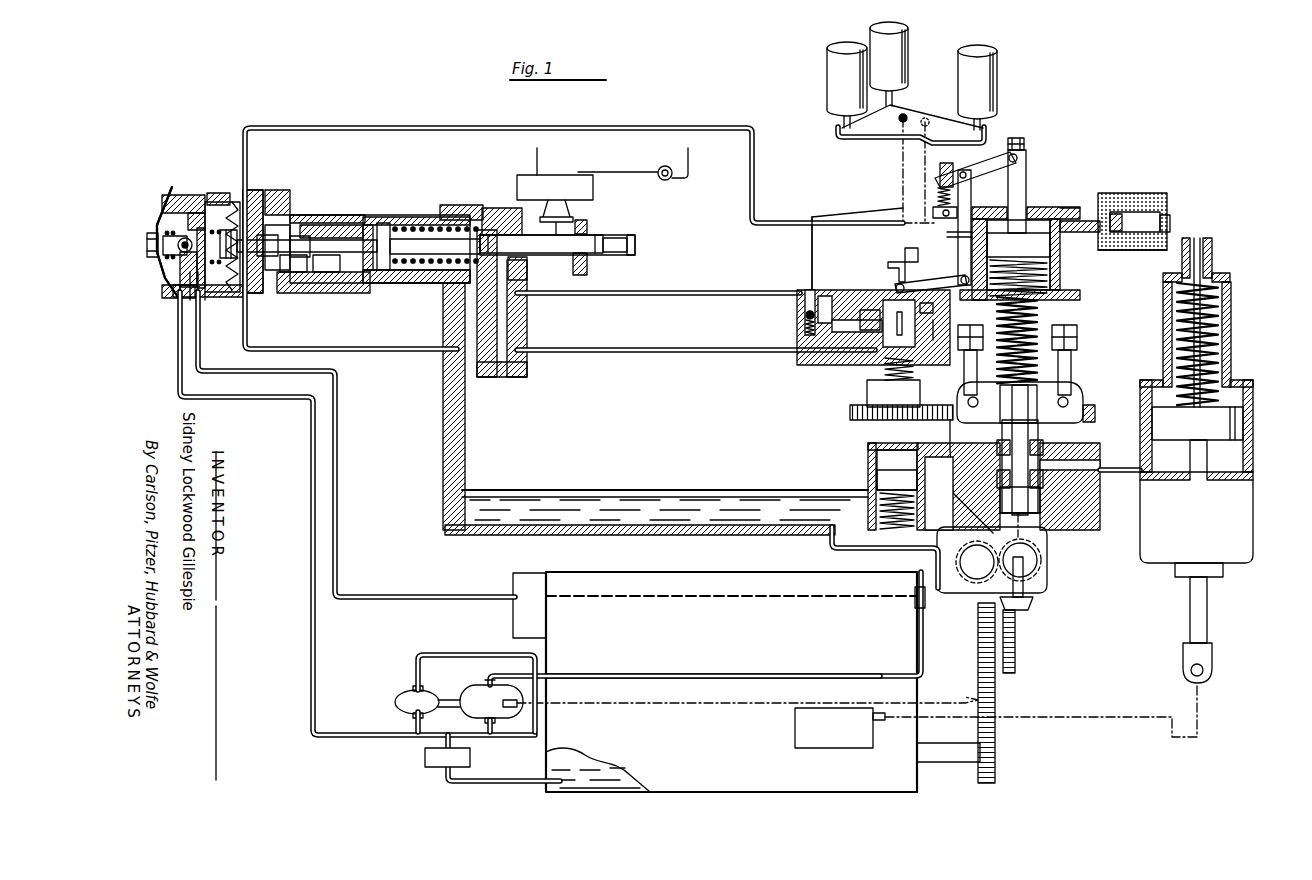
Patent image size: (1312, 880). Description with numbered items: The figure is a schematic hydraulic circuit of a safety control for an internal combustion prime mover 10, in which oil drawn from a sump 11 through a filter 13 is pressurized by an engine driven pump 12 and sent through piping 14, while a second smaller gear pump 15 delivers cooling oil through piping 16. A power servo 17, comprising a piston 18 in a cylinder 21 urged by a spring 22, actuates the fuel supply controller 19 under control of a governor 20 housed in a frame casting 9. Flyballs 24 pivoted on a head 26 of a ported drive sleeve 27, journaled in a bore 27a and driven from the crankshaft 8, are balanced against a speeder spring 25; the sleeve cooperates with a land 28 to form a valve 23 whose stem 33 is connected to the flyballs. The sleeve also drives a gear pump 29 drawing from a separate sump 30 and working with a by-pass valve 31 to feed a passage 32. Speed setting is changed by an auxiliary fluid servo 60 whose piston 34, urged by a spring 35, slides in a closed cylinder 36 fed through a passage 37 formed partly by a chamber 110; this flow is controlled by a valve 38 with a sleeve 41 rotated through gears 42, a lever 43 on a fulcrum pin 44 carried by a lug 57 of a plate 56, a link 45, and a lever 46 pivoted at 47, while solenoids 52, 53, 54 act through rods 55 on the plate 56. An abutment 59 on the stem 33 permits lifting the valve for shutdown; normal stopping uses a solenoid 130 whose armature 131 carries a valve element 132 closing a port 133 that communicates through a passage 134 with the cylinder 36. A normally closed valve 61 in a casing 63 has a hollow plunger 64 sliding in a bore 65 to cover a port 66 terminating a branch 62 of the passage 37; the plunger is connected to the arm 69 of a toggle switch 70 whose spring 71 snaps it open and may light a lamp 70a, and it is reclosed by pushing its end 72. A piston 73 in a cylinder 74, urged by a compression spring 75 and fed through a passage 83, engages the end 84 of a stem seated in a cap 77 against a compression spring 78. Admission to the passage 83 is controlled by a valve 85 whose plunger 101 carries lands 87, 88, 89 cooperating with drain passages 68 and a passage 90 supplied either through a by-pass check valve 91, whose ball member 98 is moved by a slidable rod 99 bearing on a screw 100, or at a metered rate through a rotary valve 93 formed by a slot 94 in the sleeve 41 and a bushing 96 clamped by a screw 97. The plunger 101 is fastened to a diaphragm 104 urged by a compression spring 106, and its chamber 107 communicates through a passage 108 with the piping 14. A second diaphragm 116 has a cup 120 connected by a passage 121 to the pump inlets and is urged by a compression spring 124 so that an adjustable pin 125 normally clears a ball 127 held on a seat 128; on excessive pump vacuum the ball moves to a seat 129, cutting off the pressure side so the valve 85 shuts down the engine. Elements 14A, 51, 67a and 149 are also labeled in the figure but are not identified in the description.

The engine crankshaft 8 is at (963, 766).
The frame casting 9 is at (1104, 473).
The prime mover 10 is at (913, 649).
The sump 11 is at (586, 776).
The engine driven pump 12 is at (507, 728).
The filter 13 is at (428, 768).
The piping 14 is at (340, 432).
The pipe 14A is at (690, 677).
The second smaller gear pump 15 is at (403, 684).
The piping 16 is at (470, 657).
The power servo 17 is at (1262, 458).
The piston 18 is at (1246, 425).
The fuel supply controller 19 is at (835, 748).
The governor 20 is at (1095, 285).
The cylinder 21 is at (1250, 479).
The spring 22 is at (1230, 331).
The valve 23 is at (1046, 466).
The flyballs 24 is at (1072, 342).
The speeder spring 25 is at (1030, 335).
The head 26 is at (1092, 410).
The ported drive sleeve 27 is at (1041, 500).
The bore 27a is at (1040, 520).
The land 28 is at (1019, 450).
The gear pump 29 is at (1052, 580).
The separate sump 30 is at (780, 492).
The spring loaded by-pass valve 31 is at (871, 466).
The passage 32 is at (958, 480).
The stem 33 is at (1070, 480).
The piston 34 is at (1052, 250).
The spring 35 is at (1052, 285).
The closed cylinder 36 is at (1052, 271).
The passage 37 is at (753, 200).
The valve 38 is at (862, 383).
The sleeve 41 is at (889, 368).
The gears 42 is at (945, 425).
The lever 43 is at (893, 269).
The fulcrum pin 44 is at (925, 285).
The link 45 is at (965, 236).
The lever 46 is at (987, 160).
The pivot 47 is at (942, 167).
The port 51 is at (936, 325).
The solenoid 52 is at (830, 73).
The solenoid 53 is at (908, 52).
The solenoid 54 is at (1000, 82).
The rods 55 is at (845, 122).
The plate 56 is at (862, 139).
The lug 57 is at (916, 253).
The abutment 59 is at (1026, 145).
The auxiliary fluid servo 60 is at (1066, 200).
The normally closed valve 61 is at (503, 202).
The branch 62 is at (519, 322).
The casing 63 is at (585, 273).
The hollow plunger 64 is at (598, 255).
The bore 65 is at (502, 218).
The port 66 is at (518, 262).
The housing wall 67a is at (458, 322).
The drain passages 68 is at (286, 293).
The arm 69 is at (552, 230).
The toggle signal switch 70 is at (532, 176).
The lamp 70a is at (671, 178).
The spring 71 is at (542, 162).
The end of plunger 72 is at (634, 238).
The piston 73 is at (405, 236).
The cylinder 74 is at (425, 226).
The compression spring 75 is at (455, 236).
The cap 77 is at (400, 284).
The compression spring 78 is at (382, 223).
The passage 83 is at (356, 217).
The end of stem 84 is at (365, 283).
The valve 85 is at (341, 190).
The land 87 is at (266, 258).
The land 88 is at (293, 268).
The land 89 is at (326, 268).
The passage 90 is at (336, 293).
The by-pass check valve 91 is at (790, 315).
The rotary valve 93 is at (870, 314).
The longitudinal slot 94 is at (899, 323).
The bushing 96 is at (880, 300).
The clamping screw 97 is at (935, 306).
The ball member 98 is at (806, 319).
The slidable rod 99 is at (810, 283).
The screw 100 is at (899, 119).
The plunger 101 is at (275, 238).
The diaphragm 104 is at (214, 203).
The compression spring 106 is at (222, 247).
The chamber 107 is at (218, 298).
The passage 108 is at (188, 300).
The chamber 110 is at (258, 196).
The diaphragm 116 is at (160, 200).
The cup 120 is at (176, 194).
The passage 121 is at (177, 357).
The compression spring 124 is at (152, 258).
The adjustable pin 125 is at (160, 238).
The ball 127 is at (183, 238).
The seat 128 is at (178, 298).
The seat 129 is at (228, 260).
The solenoid 130 is at (1128, 251).
The armature 131 is at (1171, 226).
The valve element 132 is at (1121, 215).
The port 133 is at (1102, 194).
The passage 134 is at (1078, 220).
The block 149 is at (163, 292).